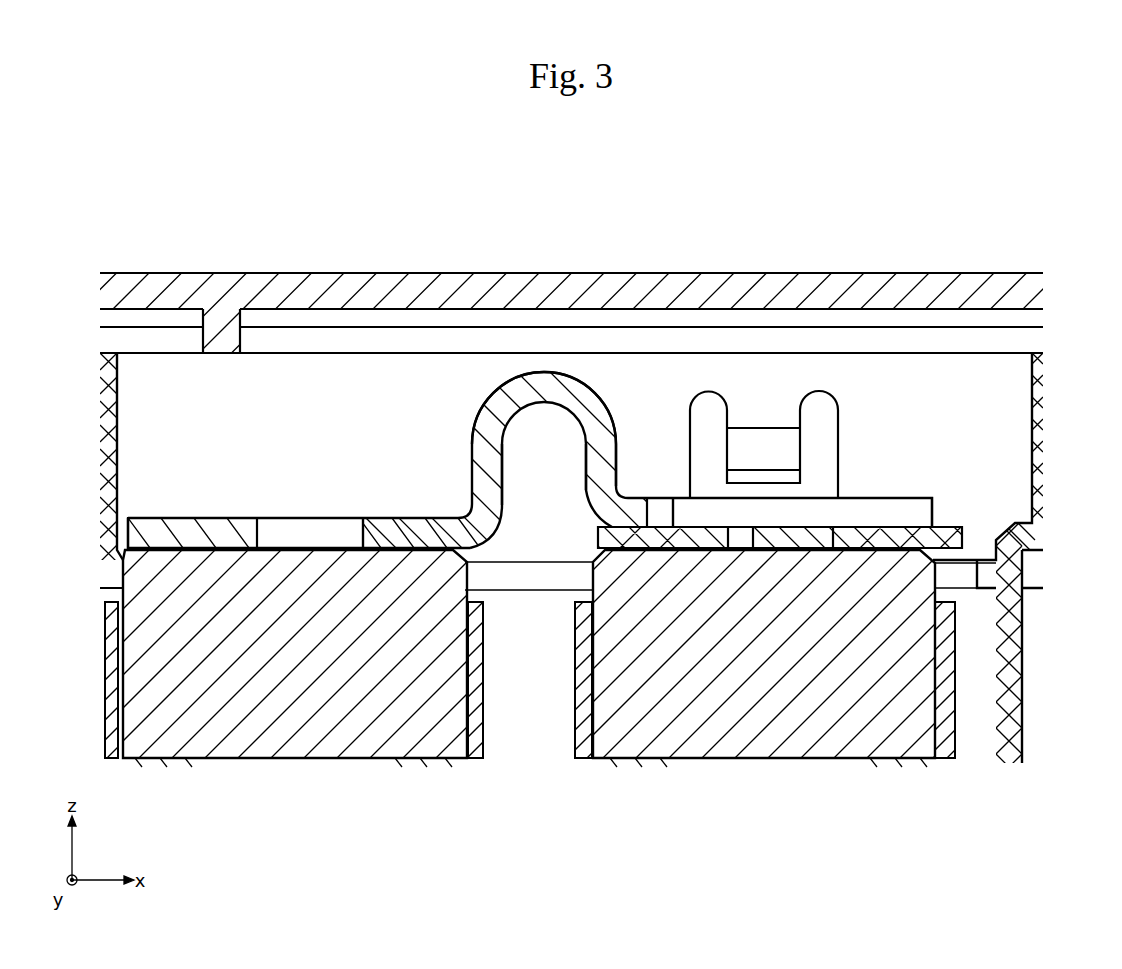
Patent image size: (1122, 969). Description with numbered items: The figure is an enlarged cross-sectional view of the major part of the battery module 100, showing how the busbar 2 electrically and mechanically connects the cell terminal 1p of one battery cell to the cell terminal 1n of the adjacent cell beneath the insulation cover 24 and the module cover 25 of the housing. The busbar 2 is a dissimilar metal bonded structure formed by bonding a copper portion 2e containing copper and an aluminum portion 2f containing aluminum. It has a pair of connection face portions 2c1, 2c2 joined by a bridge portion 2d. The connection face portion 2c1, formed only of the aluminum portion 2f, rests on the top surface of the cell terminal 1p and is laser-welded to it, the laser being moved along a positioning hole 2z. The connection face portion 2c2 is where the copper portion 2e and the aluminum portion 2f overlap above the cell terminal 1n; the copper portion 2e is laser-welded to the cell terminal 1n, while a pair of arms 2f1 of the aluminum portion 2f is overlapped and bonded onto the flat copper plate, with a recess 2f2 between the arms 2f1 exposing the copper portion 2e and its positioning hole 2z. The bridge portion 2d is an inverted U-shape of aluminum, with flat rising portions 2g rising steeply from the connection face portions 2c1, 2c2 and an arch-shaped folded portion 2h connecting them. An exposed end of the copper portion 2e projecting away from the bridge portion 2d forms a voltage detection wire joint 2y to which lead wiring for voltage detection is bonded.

The battery module 100 is at (886, 196).
The insulation cover 24 is at (156, 350).
The module cover 25 is at (330, 273).
The busbar 2 is at (589, 391).
The folded portion 2h is at (540, 372).
The bridge portion 2d is at (607, 403).
The flat portion 2g is at (603, 457).
The aluminum portion 2f is at (403, 518).
The arm 2f1 is at (888, 513).
The recess 2f2 is at (658, 513).
The connection face portion 2c1 is at (178, 518).
The connection face portion 2c2 is at (855, 497).
The positioning hole 2z is at (258, 530).
The copper portion 2e is at (904, 527).
The voltage detection wire joint 2y is at (965, 538).
The cell terminal 1p is at (252, 660).
The cell terminal 1n is at (850, 677).